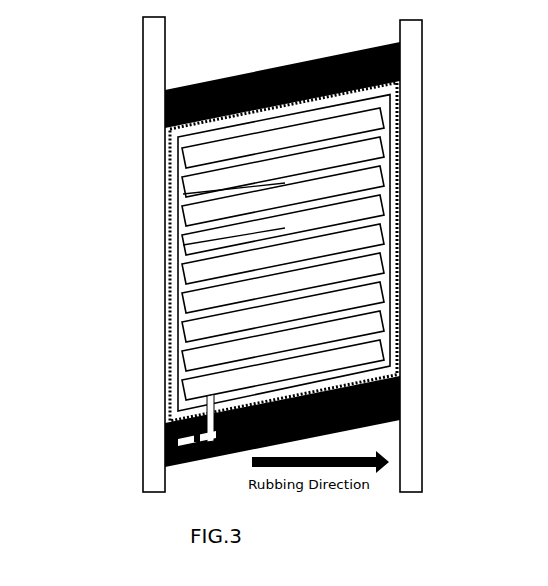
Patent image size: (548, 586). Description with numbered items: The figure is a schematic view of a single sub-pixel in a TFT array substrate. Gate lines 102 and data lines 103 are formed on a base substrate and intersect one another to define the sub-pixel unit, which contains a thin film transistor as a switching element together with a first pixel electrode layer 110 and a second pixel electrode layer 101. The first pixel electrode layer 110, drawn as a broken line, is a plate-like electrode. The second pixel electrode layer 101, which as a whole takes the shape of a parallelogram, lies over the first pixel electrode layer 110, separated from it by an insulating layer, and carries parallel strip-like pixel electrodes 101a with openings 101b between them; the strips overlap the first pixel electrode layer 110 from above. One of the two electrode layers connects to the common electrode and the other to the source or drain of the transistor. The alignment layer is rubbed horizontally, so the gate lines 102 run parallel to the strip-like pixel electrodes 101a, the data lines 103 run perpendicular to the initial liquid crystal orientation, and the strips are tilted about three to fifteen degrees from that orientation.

The second pixel electrode layer 101 is at (177, 175).
The strip-like pixel electrodes 101a is at (183, 195).
The openings of the second pixel electrode layer 101b is at (183, 247).
The gate line 102 is at (166, 463).
The data line 103 is at (162, 380).
The first pixel electrode layer 110 is at (398, 173).